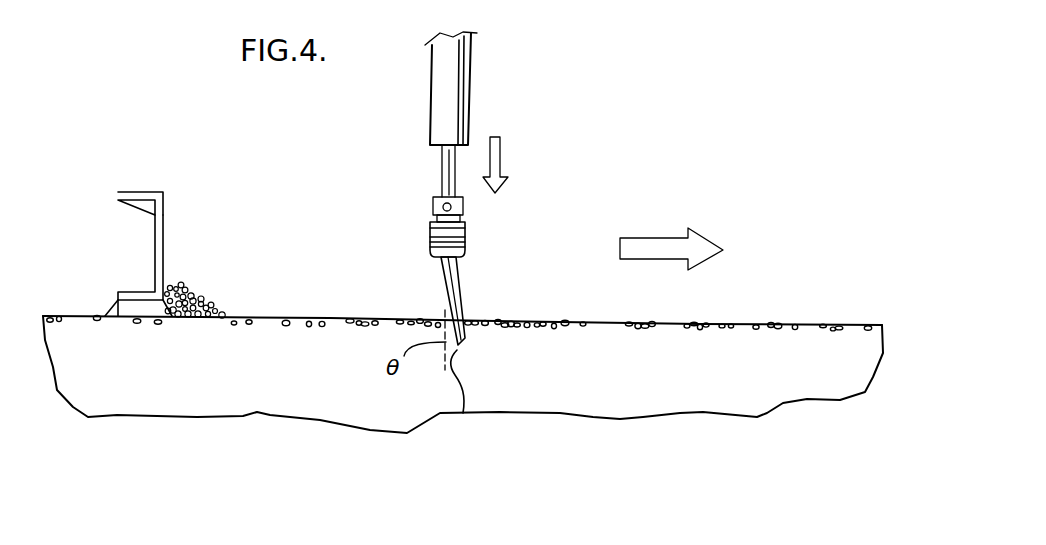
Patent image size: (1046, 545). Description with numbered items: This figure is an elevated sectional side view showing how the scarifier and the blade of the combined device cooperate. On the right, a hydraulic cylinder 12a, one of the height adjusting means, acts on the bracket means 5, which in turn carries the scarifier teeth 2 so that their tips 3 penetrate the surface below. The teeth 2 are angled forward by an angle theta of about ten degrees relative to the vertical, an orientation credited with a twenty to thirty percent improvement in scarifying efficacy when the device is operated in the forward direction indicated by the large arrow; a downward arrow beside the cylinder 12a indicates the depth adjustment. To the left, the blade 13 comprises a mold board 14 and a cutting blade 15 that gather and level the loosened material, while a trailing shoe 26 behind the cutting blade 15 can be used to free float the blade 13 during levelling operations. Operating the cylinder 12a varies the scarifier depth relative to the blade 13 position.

The teeth 2 is at (466, 280).
The tips 3 is at (463, 413).
The bracket means 5 is at (478, 227).
The hydraulic cylinder 12a is at (440, 93).
The blade 13 is at (142, 192).
The mold board 14 is at (188, 239).
The cutting blade 15 is at (163, 307).
The trailing shoe 26 is at (110, 312).